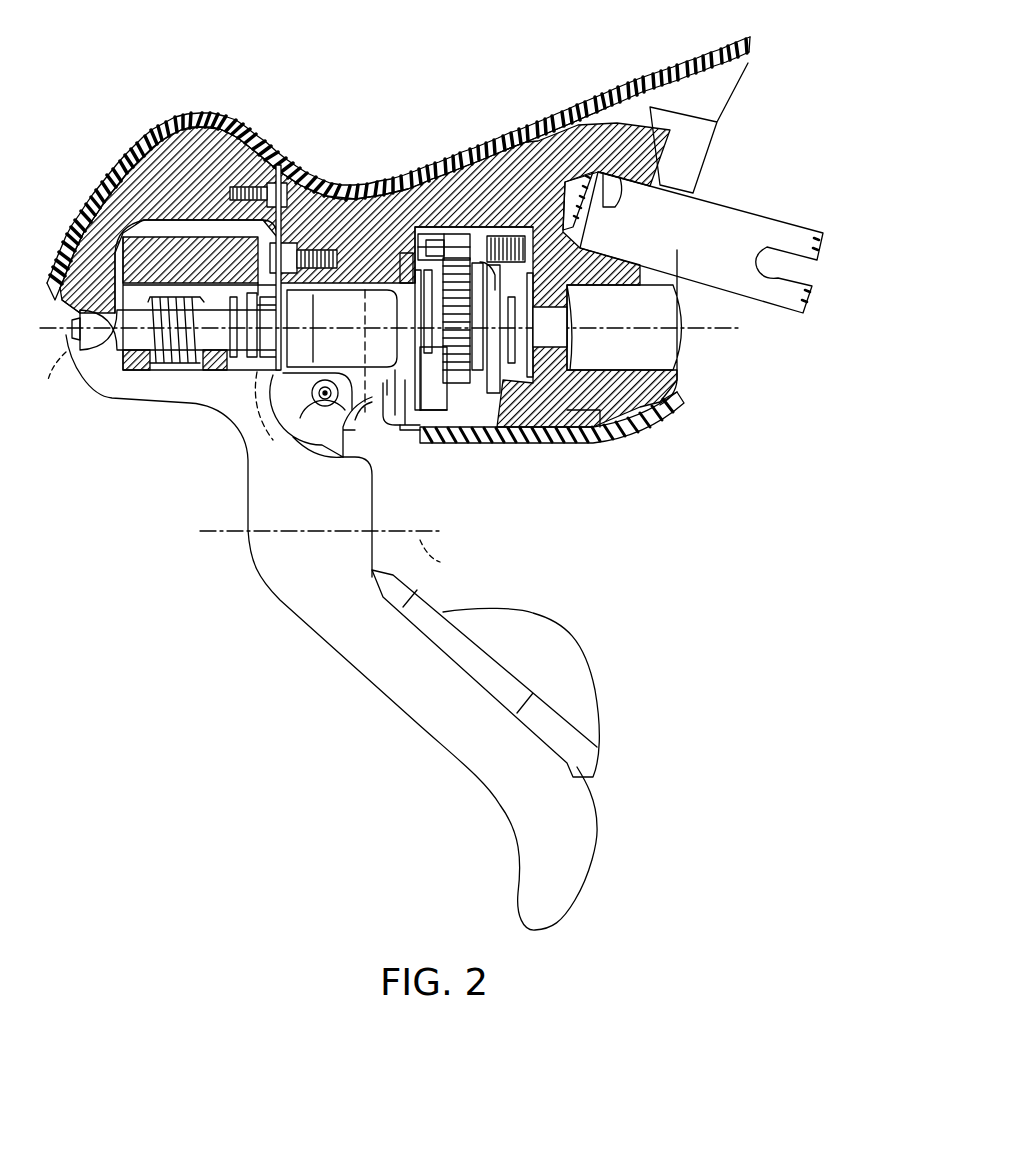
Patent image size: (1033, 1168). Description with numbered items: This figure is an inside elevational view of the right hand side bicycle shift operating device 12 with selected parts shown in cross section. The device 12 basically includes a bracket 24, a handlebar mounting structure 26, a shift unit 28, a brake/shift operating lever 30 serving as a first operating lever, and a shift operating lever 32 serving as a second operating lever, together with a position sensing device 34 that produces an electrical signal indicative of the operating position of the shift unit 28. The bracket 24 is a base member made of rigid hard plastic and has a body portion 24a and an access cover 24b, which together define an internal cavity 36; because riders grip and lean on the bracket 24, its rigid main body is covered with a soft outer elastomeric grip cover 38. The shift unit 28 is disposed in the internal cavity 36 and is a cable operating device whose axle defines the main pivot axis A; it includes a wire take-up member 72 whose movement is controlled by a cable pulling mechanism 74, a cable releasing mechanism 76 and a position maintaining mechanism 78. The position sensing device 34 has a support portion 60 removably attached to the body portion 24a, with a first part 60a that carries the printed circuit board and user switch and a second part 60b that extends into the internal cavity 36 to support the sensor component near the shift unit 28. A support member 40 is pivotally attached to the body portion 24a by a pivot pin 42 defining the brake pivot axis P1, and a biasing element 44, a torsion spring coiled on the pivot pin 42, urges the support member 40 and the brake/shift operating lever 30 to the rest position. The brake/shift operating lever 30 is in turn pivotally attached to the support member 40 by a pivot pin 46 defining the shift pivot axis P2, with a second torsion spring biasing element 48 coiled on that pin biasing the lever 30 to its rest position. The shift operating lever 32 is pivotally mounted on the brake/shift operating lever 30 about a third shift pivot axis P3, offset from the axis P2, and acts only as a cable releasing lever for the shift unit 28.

The bicycle shift operating device 12 is at (100, 110).
The bracket 24 is at (655, 80).
The body portion 24a is at (533, 150).
The access cover 24b is at (470, 446).
The handlebar mounting structure 26 is at (758, 212).
The shift unit 28 is at (500, 398).
The brake/shift operating lever 30 is at (412, 716).
The shift operating lever 32 is at (592, 655).
The position sensing device 34 is at (486, 428).
The internal cavity 36 is at (443, 428).
The grip cover 38 is at (400, 182).
The support member 40 is at (136, 366).
The pivot pin 42 is at (315, 402).
The biasing element 44 is at (300, 394).
The pivot pin 46 is at (78, 342).
The biasing element 48 is at (172, 360).
The support portion 60 is at (597, 440).
The first part 60a is at (636, 428).
The second part 60b is at (548, 410).
The wire take-up member 72 is at (478, 262).
The cable pulling mechanism 74 is at (338, 432).
The cable releasing mechanism 76 is at (394, 440).
The position maintaining mechanism 78 is at (440, 222).
The main pivot axis A is at (688, 330).
The brake pivot axis P1 is at (322, 398).
The shift pivot axis P2 is at (58, 346).
The shift pivot axis P3 is at (344, 553).